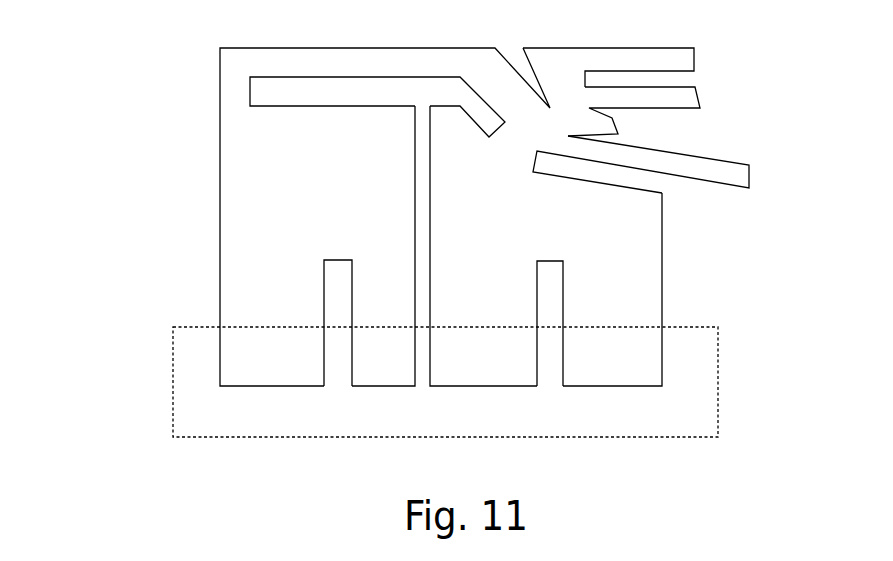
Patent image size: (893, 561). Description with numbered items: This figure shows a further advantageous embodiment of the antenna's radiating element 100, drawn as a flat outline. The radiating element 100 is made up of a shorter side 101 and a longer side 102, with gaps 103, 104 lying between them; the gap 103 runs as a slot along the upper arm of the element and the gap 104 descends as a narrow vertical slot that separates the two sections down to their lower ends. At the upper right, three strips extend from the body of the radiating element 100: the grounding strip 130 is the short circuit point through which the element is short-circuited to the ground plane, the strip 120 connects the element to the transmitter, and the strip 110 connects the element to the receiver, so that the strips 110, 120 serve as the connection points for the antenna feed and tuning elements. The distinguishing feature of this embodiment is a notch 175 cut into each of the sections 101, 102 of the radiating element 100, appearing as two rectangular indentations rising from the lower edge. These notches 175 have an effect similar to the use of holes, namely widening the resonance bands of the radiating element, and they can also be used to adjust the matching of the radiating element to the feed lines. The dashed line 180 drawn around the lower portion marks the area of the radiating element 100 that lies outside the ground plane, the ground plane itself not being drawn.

The radiating element 100 is at (436, 201).
The shorter side 101 is at (651, 289).
The longer side 102 is at (240, 217).
The gap 103 is at (400, 102).
The gap 104 is at (439, 246).
The strip 110 is at (674, 164).
The strip 120 is at (678, 94).
The grounding strip 130 is at (645, 51).
The notch 175 is at (403, 323).
The dashed line 180 is at (573, 437).